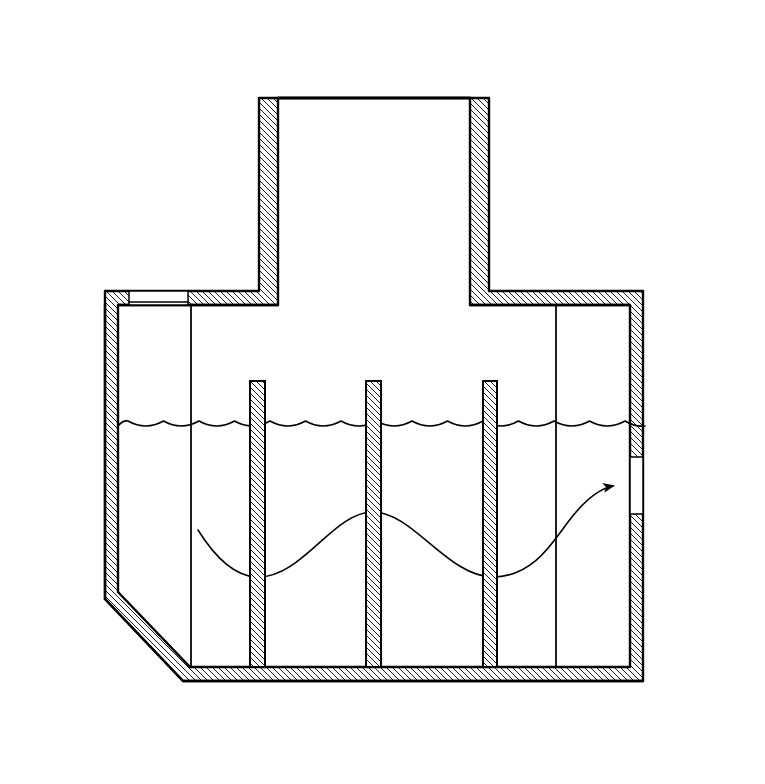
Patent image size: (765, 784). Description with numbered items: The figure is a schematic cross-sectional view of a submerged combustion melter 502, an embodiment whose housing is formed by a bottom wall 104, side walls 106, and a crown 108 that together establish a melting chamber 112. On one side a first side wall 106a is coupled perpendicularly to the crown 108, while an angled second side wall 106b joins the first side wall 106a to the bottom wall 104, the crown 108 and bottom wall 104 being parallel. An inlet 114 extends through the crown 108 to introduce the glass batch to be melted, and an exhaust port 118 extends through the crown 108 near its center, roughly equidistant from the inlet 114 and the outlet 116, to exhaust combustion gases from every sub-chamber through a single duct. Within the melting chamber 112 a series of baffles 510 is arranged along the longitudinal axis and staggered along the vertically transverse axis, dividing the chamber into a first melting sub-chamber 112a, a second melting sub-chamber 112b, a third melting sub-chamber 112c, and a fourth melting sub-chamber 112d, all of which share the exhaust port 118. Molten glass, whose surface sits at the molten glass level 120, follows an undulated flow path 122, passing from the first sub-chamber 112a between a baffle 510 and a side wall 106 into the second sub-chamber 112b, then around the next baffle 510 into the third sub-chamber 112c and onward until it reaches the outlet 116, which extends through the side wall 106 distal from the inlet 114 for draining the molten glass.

The submerged combustion melter 502 is at (128, 690).
The side wall 106 is at (640, 320).
The first side wall 106a is at (110, 541).
The second side wall 106b is at (130, 615).
The bottom wall 104 is at (598, 678).
The crown 108 is at (243, 289).
The melting chamber 112 is at (373, 486).
The first melting sub-chamber 112a is at (213, 372).
The second melting sub-chamber 112b is at (330, 360).
The third melting sub-chamber 112c is at (447, 366).
The fourth melting sub-chamber 112d is at (591, 366).
The inlet 114 is at (148, 289).
The outlet 116 is at (641, 482).
The exhaust port 118 is at (347, 125).
The molten glass level 120 is at (150, 421).
The undulated flow path 122 is at (316, 526).
The baffle 510 is at (258, 626).